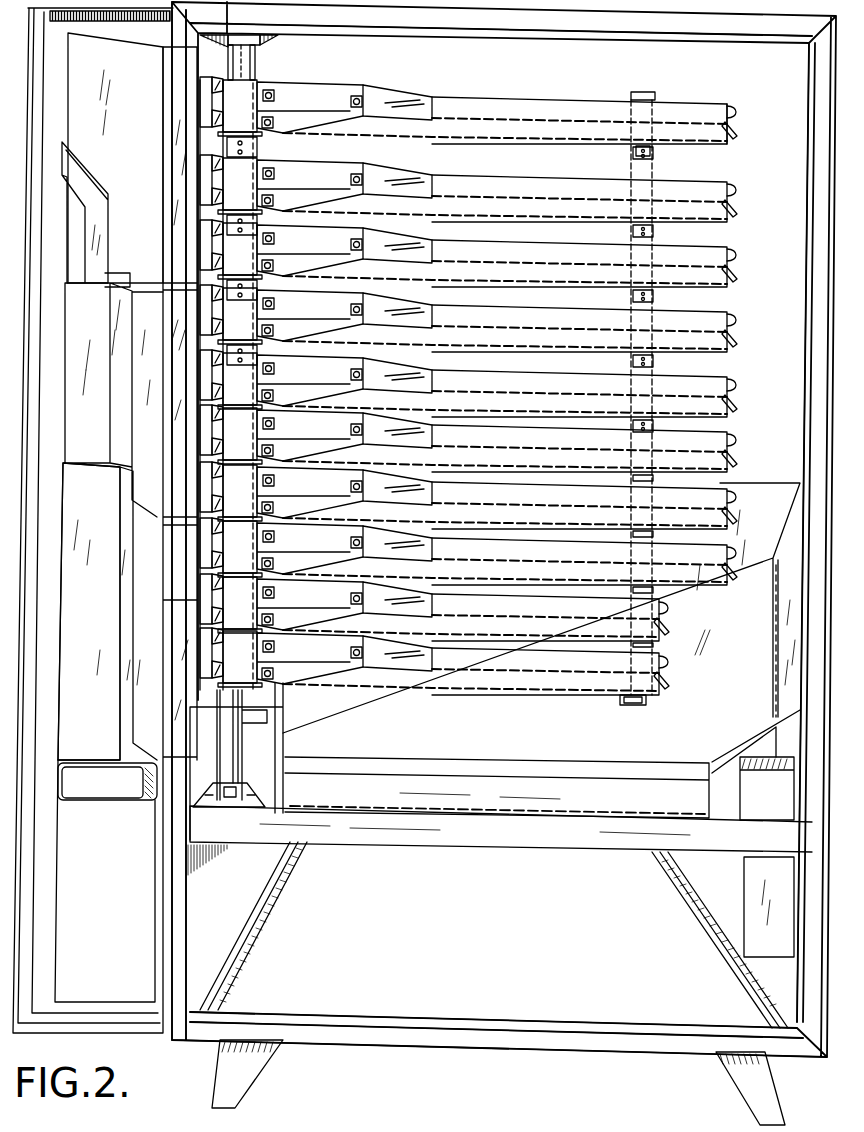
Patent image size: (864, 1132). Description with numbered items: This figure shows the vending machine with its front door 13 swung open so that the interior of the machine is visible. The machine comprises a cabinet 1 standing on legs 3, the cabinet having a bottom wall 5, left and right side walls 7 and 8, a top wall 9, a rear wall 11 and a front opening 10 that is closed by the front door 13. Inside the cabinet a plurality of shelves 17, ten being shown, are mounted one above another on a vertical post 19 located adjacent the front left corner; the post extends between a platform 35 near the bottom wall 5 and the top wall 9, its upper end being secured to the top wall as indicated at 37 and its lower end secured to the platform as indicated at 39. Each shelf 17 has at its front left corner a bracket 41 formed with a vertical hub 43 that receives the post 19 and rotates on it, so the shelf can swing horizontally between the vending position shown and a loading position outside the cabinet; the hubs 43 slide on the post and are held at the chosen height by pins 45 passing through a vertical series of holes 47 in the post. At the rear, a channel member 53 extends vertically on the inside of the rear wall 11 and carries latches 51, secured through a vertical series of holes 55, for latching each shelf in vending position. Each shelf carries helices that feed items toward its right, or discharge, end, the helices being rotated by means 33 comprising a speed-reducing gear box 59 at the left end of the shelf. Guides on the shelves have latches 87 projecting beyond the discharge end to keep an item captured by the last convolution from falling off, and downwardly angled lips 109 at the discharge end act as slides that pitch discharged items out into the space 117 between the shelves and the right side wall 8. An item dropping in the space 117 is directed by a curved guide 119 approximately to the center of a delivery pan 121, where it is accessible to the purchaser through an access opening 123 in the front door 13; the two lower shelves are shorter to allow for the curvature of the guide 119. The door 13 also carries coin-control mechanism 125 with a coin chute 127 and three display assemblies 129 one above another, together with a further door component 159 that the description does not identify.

The cabinet 1 is at (383, 1050).
The legs 3 is at (250, 1080).
The bottom wall 5 is at (488, 1046).
The left side wall 7 is at (187, 912).
The right side wall 8 is at (810, 69).
The top wall 9 is at (414, 44).
The front opening 10 is at (213, 625).
The rear wall 11 is at (585, 1000).
The front door 13 is at (123, 1024).
The shelves 17 is at (527, 91).
The vertical post 19 is at (233, 740).
The helix rotating means 33 is at (201, 141).
The platform 35 is at (380, 833).
The upper post securement 37 is at (268, 43).
The lower post securement 39 is at (203, 800).
The bracket 41 is at (332, 88).
The vertical hub 43 is at (248, 109).
The pins 45 is at (222, 219).
The holes 47 is at (253, 149).
The latch 51 is at (633, 152).
The channel member 53 is at (640, 94).
The holes 55 is at (652, 158).
The speed-reducing gear box 59 is at (213, 78).
The latch 87 is at (733, 116).
The downwardly angled lips 109 is at (741, 133).
The space 117 is at (754, 318).
The curved guide 119 is at (754, 583).
The delivery pan 121 is at (515, 773).
The access opening 123 is at (118, 797).
The coin-control mechanism 125 is at (89, 611).
The coin chute 127 is at (100, 182).
The display assemblies 129 is at (86, 102).
The door header strip 159 is at (95, 22).